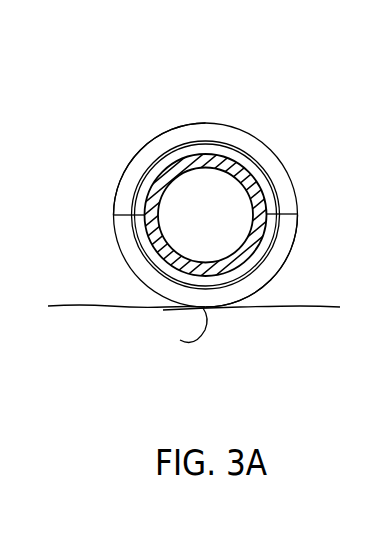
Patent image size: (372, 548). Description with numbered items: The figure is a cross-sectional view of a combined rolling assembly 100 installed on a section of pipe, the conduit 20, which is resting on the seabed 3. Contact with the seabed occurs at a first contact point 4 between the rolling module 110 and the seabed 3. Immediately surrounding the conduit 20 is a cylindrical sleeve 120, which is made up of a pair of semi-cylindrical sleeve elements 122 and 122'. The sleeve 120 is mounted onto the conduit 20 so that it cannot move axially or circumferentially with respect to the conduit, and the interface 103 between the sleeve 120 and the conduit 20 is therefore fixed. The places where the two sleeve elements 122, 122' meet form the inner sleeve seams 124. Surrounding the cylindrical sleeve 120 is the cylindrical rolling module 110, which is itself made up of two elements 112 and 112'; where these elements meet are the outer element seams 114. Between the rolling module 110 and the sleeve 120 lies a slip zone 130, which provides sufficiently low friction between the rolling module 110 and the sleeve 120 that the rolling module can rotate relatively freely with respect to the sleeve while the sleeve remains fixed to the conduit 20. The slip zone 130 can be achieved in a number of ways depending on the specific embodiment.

The seabed 3 is at (317, 308).
The first contact point 4 is at (180, 340).
The conduit 20 is at (270, 165).
The rolling assembly 100 is at (204, 261).
The interface 103 is at (166, 143).
The rolling module 110 is at (259, 127).
The rolling module element 112 is at (273, 261).
The rolling module element 112' is at (133, 169).
The outer element seams 114 is at (117, 215).
The cylindrical sleeve 120 is at (215, 180).
The semi-cylindrical sleeve element 122 is at (189, 169).
The semi-cylindrical sleeve element 122' is at (182, 252).
The inner sleeve seams 124 is at (139, 228).
The slip zone 130 is at (213, 138).